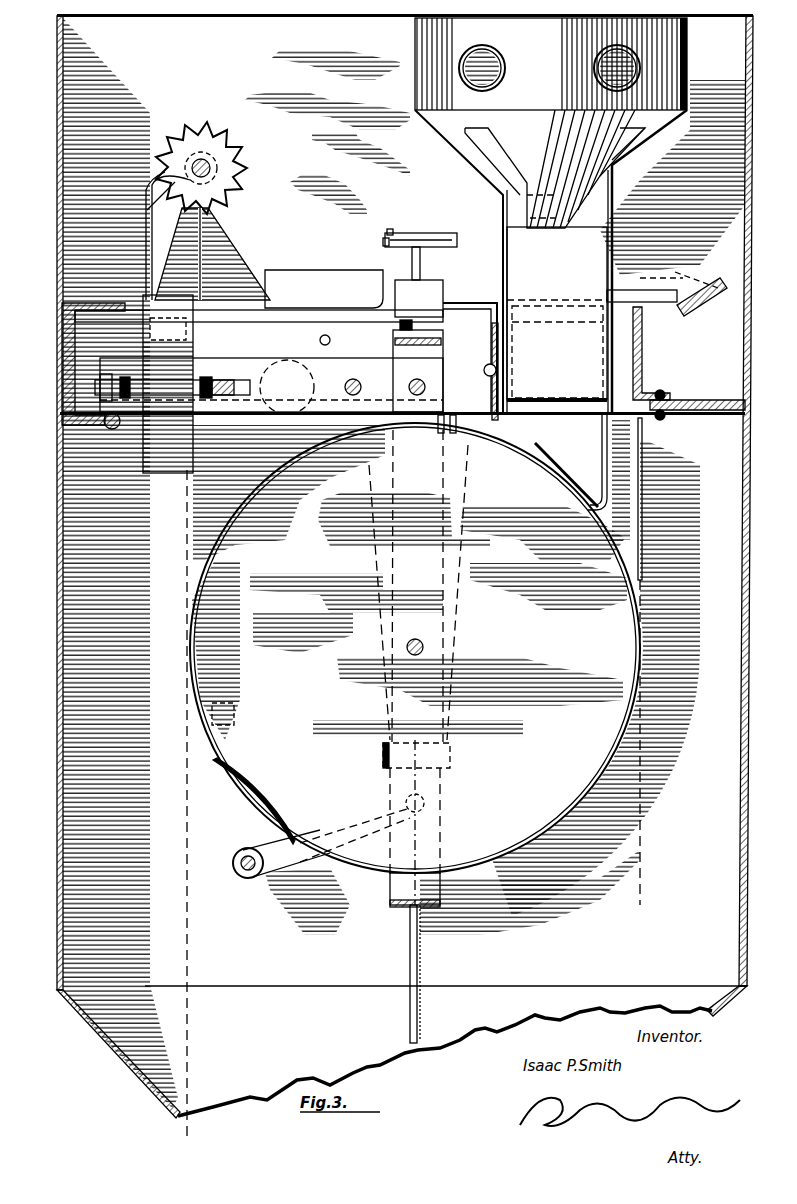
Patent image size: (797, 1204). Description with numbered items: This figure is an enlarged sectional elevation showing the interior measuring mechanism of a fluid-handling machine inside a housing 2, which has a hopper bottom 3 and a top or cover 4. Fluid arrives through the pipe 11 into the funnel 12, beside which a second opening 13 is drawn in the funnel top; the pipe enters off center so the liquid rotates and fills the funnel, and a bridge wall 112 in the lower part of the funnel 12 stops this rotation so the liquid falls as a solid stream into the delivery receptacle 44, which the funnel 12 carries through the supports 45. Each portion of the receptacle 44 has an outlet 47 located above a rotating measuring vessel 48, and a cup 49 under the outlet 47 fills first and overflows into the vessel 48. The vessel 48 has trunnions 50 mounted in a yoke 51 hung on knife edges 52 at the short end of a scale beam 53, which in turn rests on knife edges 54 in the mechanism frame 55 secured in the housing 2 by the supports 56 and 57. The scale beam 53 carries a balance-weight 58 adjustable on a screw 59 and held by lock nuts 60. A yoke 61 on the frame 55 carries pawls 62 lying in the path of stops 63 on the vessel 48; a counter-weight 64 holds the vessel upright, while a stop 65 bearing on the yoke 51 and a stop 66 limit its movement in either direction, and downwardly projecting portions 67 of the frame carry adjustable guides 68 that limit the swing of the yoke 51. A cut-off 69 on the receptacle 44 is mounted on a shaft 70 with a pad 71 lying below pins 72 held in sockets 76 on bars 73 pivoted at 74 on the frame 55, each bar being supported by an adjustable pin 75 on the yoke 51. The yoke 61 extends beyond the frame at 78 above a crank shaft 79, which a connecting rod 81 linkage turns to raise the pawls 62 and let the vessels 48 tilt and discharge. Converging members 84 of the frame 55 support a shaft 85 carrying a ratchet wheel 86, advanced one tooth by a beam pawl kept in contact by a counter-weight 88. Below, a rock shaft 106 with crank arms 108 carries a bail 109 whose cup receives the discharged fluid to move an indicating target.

The housing 2 is at (753, 405).
The hopper bottom 3 is at (165, 1098).
The top or cover 4 is at (100, 58).
The pipe 11 is at (500, 52).
The funnel 12 is at (688, 50).
The hopper opening 13 is at (596, 80).
The delivery receptacle 44 is at (642, 365).
The supports 45 is at (505, 208).
The outlet 47 is at (565, 415).
The rotating measuring vessel 48 is at (190, 645).
The cup 49 is at (602, 452).
The trunnions 50 is at (424, 647).
The yoke 51 is at (392, 907).
The knife edges 52 is at (414, 380).
The scale beam 53 is at (330, 405).
The knife edges 54 is at (358, 382).
The mechanism frame 55 is at (320, 310).
The support 56 is at (705, 400).
The support 57 is at (70, 435).
The balance-weight 58 is at (172, 473).
The screw 59 is at (220, 378).
The lock nuts 60 is at (140, 382).
The yoke 61 is at (393, 334).
The pawls 62 is at (500, 390).
The stops 63 is at (440, 433).
The counter-weight 64 is at (240, 800).
The stop 65 is at (455, 433).
The stop 66 is at (236, 716).
The downwardly projecting portions 67 is at (448, 600).
The guides 68 is at (382, 757).
The cut-off 69 is at (557, 314).
The shaft 70 is at (475, 300).
The pad 71 is at (395, 292).
The pins 72 is at (412, 268).
The bars 73 is at (430, 236).
The pivot 74 is at (392, 232).
The pin 75 is at (400, 328).
The sockets 76 is at (383, 243).
The extension of yoke 78 is at (640, 300).
The crank shaft 79 is at (683, 313).
The connecting rod 81 is at (185, 176).
The converging members 84 is at (240, 250).
The shaft 85 is at (207, 160).
The ratchet wheel 86 is at (232, 150).
The counter-weight 88 is at (287, 360).
The rock shaft 106 is at (240, 875).
The crank arms 108 is at (300, 862).
The bail 109 is at (410, 1012).
The bridge wall 112 is at (533, 195).